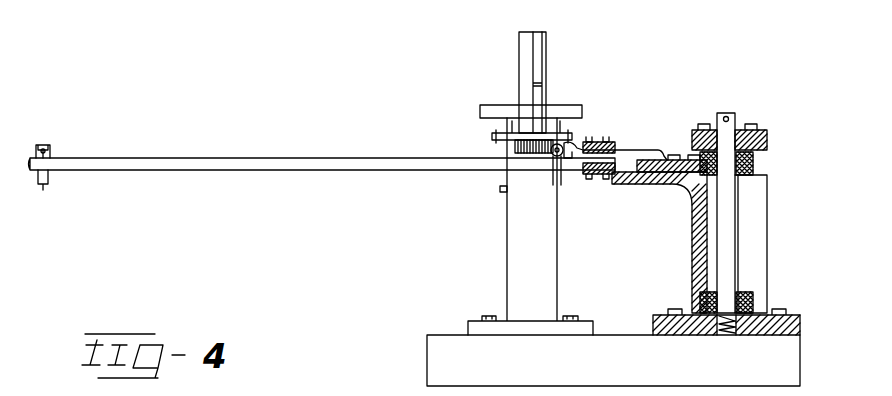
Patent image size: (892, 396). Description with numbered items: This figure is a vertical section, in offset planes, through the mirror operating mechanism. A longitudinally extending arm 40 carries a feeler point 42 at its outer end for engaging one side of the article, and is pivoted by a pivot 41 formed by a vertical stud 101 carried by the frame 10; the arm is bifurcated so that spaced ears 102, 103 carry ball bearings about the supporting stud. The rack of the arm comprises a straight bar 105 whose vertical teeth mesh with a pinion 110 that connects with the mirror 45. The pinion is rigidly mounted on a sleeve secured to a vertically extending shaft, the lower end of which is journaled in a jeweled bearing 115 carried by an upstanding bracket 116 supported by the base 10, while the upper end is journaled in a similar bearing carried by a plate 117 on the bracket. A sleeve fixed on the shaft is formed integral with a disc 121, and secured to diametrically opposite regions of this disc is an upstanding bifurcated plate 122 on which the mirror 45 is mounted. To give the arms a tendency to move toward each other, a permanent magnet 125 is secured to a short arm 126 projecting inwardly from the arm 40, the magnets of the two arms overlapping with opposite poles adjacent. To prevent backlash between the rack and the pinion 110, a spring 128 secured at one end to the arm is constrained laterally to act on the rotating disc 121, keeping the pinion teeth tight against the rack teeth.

The frame 10 is at (613, 360).
The arm 40 is at (378, 160).
The pivot 41 is at (729, 112).
The feeler point 42 is at (50, 150).
The mirror 45 is at (540, 56).
The vertical stud 101 is at (727, 228).
The ear 102 is at (750, 180).
The ear 103 is at (755, 162).
The straight bar 105 is at (558, 160).
The pinion 110 is at (520, 155).
The jeweled bearing 115 is at (503, 193).
The upstanding bracket 116 is at (510, 125).
The plate 117 is at (490, 108).
The disc 121 is at (495, 138).
The upstanding bifurcated plate 122 is at (519, 59).
The permanent magnet 125 is at (612, 143).
The short arm 126 is at (603, 142).
The spring 128 is at (636, 150).